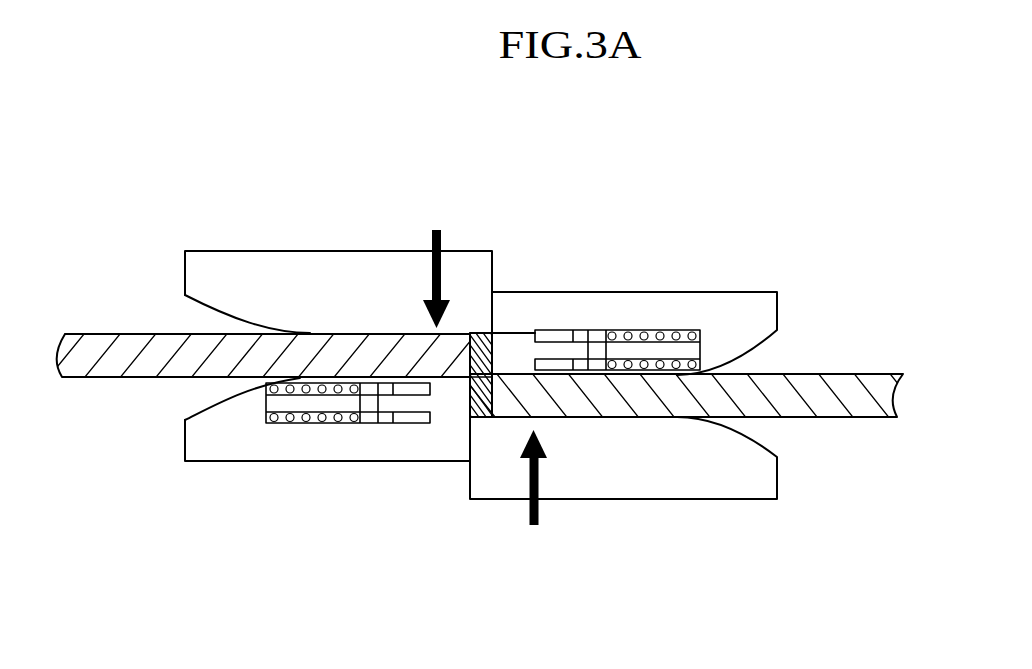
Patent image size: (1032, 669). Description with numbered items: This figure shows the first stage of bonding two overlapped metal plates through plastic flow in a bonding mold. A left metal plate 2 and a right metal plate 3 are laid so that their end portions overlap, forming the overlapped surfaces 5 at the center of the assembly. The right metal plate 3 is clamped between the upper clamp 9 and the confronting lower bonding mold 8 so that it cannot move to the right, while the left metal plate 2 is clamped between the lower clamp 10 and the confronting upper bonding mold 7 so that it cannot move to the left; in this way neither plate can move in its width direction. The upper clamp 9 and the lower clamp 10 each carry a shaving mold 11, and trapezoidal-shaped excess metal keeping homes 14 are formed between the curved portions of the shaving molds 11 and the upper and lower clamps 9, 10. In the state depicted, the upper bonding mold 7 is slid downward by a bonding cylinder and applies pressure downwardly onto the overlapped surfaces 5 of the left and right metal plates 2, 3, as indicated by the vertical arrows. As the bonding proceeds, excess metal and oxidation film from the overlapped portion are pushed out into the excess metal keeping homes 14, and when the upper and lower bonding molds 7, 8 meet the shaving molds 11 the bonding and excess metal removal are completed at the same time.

The left metal plate 2 is at (113, 355).
The right metal plate 3 is at (818, 395).
The overlapped surfaces 5 is at (491, 390).
The upper bonding mold 7 is at (340, 285).
The lower bonding mold 8 is at (633, 475).
The upper clamp 9 is at (615, 310).
The lower clamp 10 is at (283, 449).
The shaving molds 11 is at (520, 347).
The excess metal keeping homes 14 is at (494, 340).